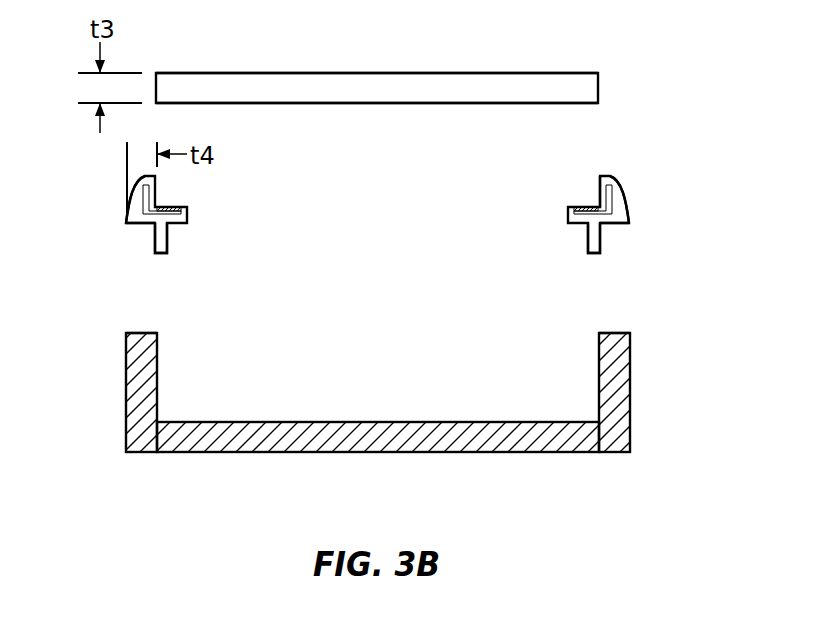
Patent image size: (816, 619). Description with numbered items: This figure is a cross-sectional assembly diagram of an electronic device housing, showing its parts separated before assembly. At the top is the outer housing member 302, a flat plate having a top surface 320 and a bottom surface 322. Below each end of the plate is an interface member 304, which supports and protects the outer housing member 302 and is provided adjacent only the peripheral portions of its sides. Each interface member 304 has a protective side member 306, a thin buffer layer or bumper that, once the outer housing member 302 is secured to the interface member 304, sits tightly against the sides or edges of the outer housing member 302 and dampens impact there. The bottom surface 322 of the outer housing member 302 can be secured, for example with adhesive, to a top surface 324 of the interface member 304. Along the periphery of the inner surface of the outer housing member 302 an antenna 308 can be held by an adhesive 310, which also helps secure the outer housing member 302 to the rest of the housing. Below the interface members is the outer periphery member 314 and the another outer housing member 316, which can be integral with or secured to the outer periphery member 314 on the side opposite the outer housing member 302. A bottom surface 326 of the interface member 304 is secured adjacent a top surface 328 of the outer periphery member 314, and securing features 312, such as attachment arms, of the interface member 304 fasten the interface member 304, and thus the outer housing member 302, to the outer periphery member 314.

The outer housing member 302 is at (315, 86).
The top surface 320 is at (452, 73).
The bottom surface 322 is at (366, 103).
The interface member 304 is at (137, 216).
The protective side member 306 is at (126, 154).
The antenna 308 is at (140, 197).
The adhesive 310 is at (175, 203).
The securing features 312 is at (170, 238).
The top surface 324 is at (580, 188).
The bottom surface 326 is at (133, 228).
The outer periphery member 314 is at (126, 395).
The another outer housing member 316 is at (363, 443).
The top surface 328 is at (142, 333).